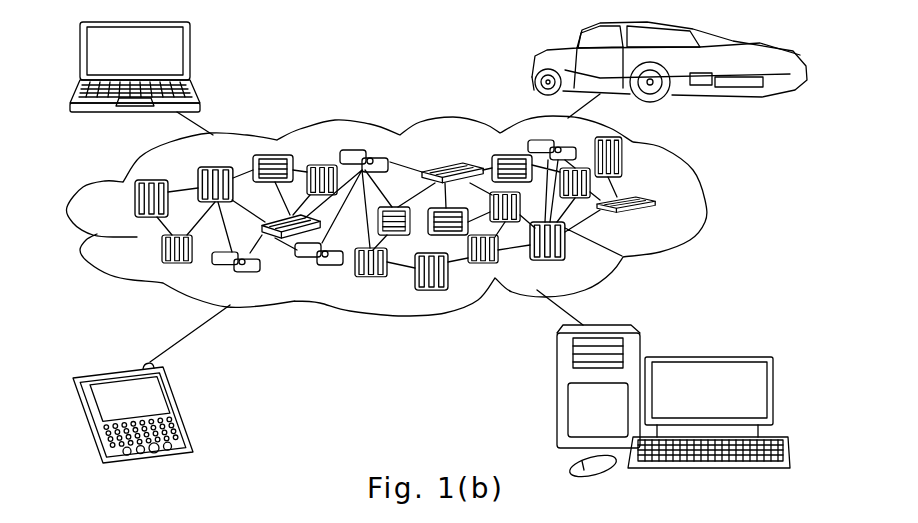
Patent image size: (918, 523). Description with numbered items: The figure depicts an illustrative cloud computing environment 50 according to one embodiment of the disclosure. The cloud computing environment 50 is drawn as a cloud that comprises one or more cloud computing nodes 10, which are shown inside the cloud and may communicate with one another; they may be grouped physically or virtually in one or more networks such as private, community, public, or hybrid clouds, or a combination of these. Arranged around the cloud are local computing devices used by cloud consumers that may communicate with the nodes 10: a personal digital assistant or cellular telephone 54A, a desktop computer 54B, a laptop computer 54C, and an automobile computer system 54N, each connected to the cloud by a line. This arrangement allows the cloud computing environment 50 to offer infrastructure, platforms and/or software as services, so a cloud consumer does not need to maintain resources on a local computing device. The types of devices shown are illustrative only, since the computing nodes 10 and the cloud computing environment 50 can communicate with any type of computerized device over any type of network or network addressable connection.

The cloud computing environment 50 is at (703, 201).
The cloud computing nodes 10 is at (665, 219).
The personal digital assistant (PDA) or cellular telephone 54A is at (185, 405).
The desktop computer 54B is at (717, 346).
The laptop computer 54C is at (190, 58).
The automobile computer system 54N is at (536, 65).